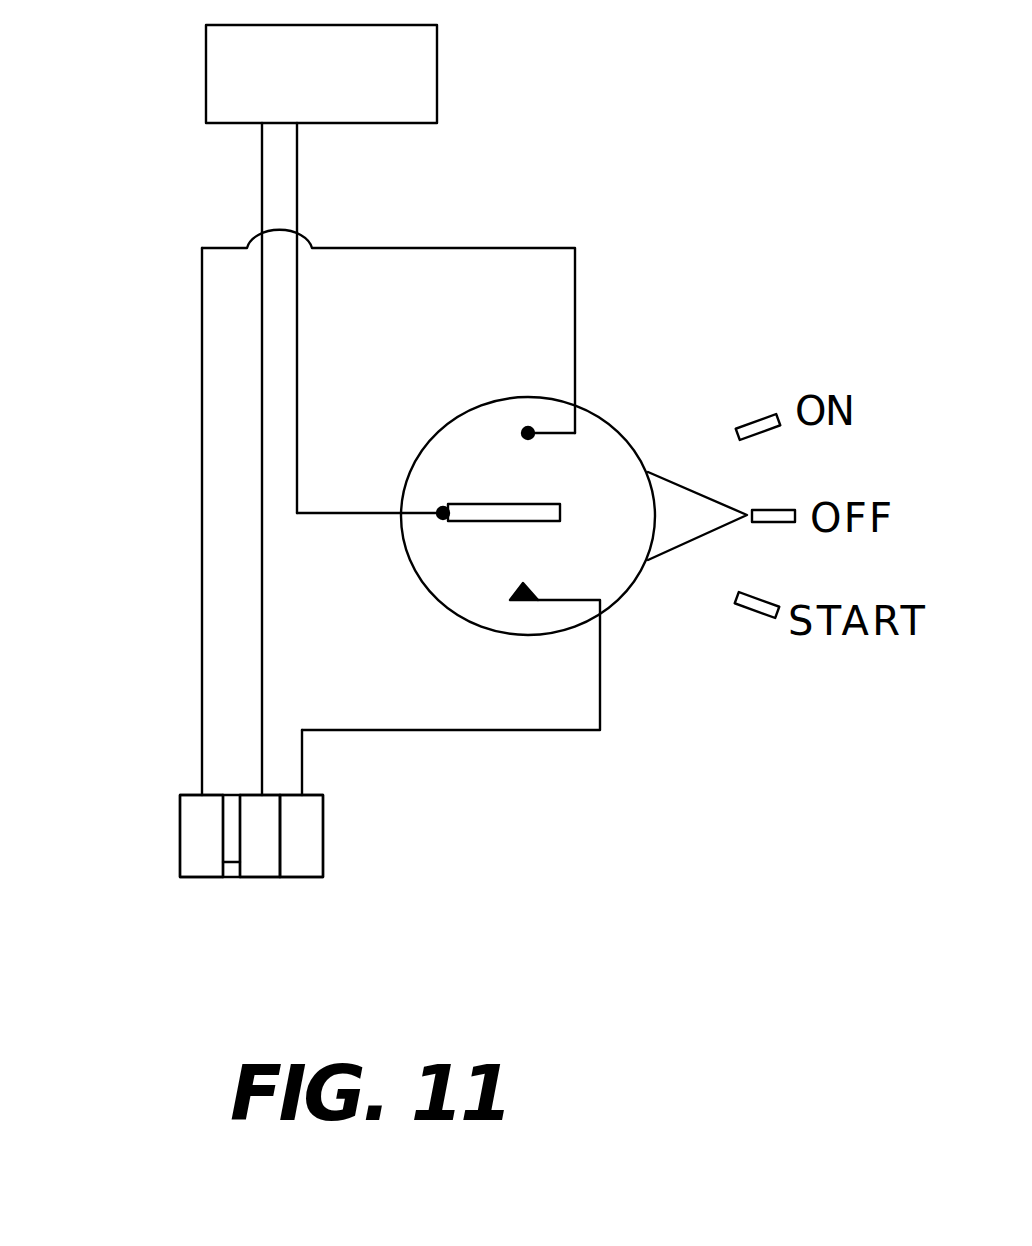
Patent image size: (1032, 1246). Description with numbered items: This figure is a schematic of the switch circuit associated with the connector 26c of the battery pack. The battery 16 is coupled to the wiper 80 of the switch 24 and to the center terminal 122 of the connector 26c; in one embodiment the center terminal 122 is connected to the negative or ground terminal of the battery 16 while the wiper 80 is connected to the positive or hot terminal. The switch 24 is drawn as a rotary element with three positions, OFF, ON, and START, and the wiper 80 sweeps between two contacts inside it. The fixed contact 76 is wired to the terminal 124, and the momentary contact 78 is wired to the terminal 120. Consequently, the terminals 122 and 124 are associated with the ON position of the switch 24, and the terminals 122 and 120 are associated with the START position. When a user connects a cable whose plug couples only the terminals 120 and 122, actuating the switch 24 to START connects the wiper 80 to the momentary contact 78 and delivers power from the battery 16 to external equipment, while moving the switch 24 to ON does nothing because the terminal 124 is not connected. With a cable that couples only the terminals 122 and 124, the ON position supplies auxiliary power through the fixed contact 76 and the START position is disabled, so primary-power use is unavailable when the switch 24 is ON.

The battery 16 is at (328, 97).
The switch 24 is at (418, 463).
The connector 26c is at (294, 916).
The fixed contact 76 is at (528, 433).
The momentary contact 78 is at (530, 602).
The wiper 80 is at (458, 518).
The terminal 120 is at (312, 857).
The center terminal 122 is at (255, 867).
The terminal 124 is at (200, 865).